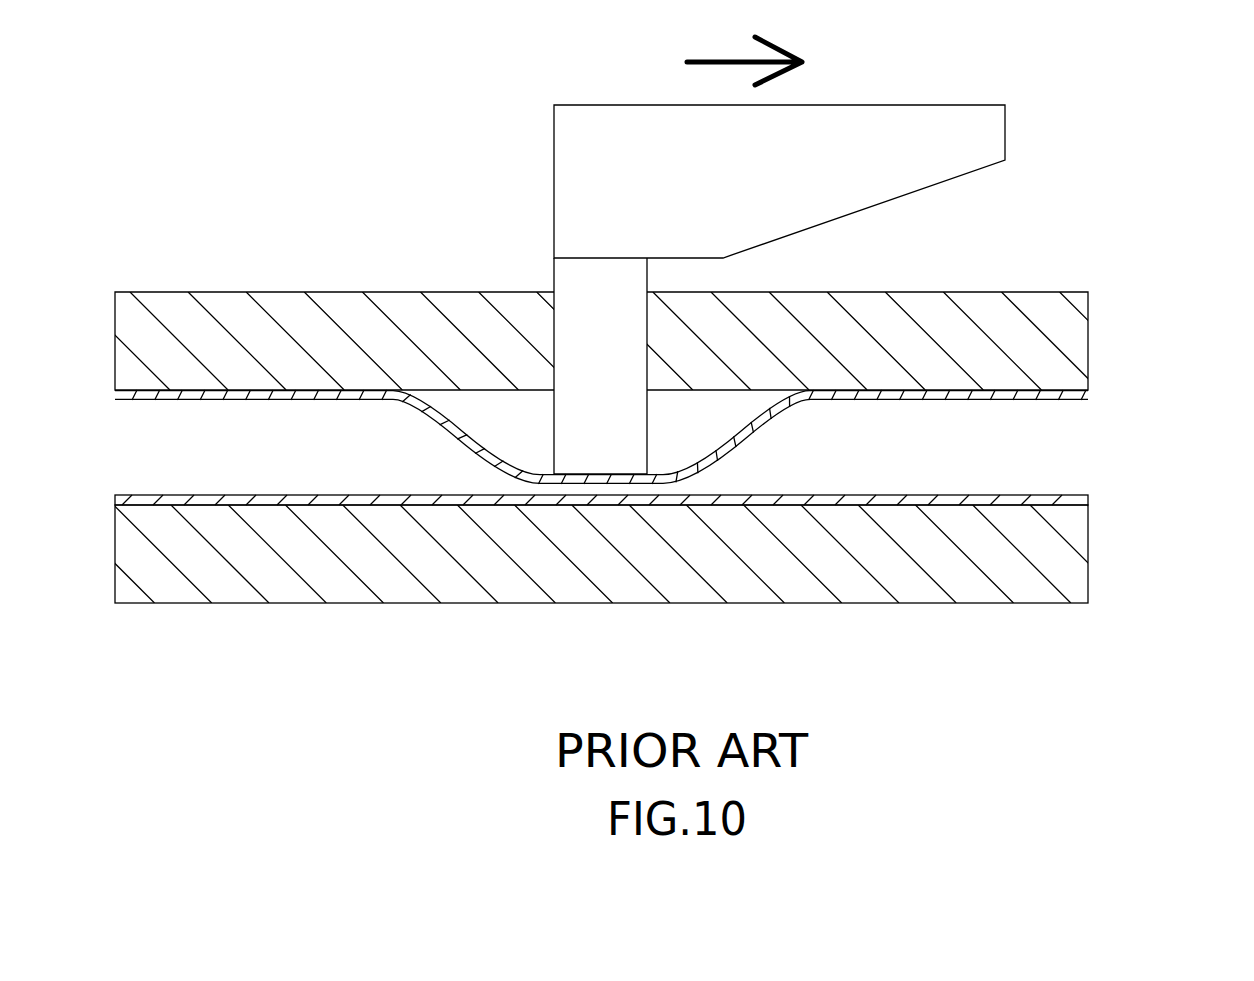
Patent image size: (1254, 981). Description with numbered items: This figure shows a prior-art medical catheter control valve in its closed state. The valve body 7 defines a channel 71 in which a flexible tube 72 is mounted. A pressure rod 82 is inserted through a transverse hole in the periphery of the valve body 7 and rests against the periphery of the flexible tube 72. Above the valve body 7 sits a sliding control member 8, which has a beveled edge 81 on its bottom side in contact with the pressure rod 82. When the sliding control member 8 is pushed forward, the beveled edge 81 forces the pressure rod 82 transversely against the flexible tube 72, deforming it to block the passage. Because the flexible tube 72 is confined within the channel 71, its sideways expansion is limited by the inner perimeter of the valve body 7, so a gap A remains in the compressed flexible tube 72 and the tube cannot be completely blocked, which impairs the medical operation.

The valve body 7 is at (649, 403).
The channel 71 is at (1028, 400).
The flexible tube 72 is at (1028, 495).
The sliding control member 8 is at (762, 237).
The beveled edge 81 is at (928, 187).
The pressure rod 82 is at (575, 287).
The gap A is at (603, 489).